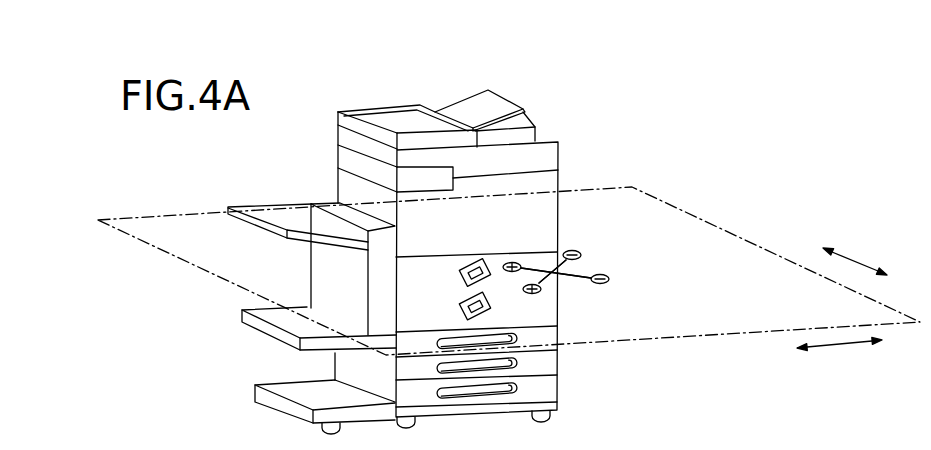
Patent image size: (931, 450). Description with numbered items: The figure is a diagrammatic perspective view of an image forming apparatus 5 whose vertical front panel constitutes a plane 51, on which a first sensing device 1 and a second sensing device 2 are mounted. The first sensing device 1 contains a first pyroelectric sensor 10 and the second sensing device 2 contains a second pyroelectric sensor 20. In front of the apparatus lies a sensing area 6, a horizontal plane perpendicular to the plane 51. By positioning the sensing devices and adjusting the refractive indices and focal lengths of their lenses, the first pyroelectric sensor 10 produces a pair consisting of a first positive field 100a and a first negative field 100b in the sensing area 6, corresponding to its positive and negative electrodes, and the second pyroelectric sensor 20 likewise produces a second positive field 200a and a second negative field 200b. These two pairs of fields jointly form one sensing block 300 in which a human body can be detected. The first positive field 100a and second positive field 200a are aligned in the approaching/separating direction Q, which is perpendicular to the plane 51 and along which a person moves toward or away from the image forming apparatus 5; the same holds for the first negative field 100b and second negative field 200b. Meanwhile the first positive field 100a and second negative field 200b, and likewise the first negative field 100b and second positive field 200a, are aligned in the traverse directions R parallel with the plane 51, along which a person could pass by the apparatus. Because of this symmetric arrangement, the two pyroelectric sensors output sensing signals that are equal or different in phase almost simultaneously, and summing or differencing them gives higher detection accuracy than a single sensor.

The image forming apparatus 5 is at (415, 244).
The plane 51 is at (540, 205).
The sensing area 6 is at (758, 268).
The first sensing device 1 is at (466, 264).
The first pyroelectric sensor 10 is at (478, 259).
The second sensing device 2 is at (460, 300).
The second pyroelectric sensor 20 is at (488, 297).
The first positive field 100a is at (541, 291).
The first negative field 100b is at (580, 252).
The second positive field 200a is at (519, 262).
The second negative field 200b is at (609, 280).
The sensing block 300 is at (586, 295).
The approaching/separating direction Q is at (859, 235).
The traverse directions R is at (839, 377).